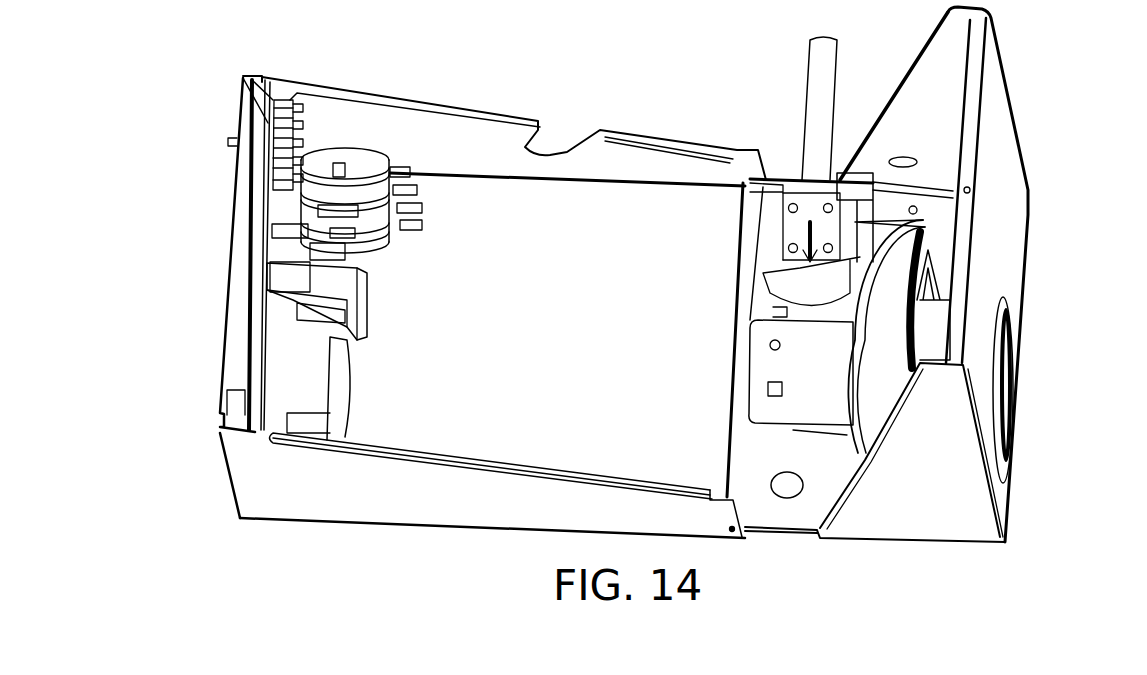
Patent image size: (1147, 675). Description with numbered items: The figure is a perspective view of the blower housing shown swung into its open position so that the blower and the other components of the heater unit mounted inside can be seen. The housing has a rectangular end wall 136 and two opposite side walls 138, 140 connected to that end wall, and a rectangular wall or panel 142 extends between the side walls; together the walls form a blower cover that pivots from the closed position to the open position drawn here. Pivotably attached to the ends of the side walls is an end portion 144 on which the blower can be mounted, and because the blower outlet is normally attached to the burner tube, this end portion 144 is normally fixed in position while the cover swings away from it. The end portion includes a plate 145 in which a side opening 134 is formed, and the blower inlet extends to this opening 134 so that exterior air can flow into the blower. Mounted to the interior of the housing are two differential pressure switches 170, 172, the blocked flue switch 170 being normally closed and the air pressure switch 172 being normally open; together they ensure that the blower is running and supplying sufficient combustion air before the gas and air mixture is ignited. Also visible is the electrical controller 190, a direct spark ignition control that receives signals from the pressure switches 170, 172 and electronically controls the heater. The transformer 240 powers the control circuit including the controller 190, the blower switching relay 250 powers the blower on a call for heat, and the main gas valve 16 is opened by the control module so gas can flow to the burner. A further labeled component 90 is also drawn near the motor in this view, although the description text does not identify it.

The main gas valve 16 is at (740, 234).
The housing 90 is at (763, 363).
The side opening 134 is at (1003, 333).
The end wall 136 is at (236, 182).
The side wall 138 is at (480, 133).
The side wall 140 is at (422, 477).
The rectangular wall or panel 142 is at (578, 304).
The end portion 144 is at (905, 497).
The plate 145 is at (995, 128).
The differential pressure switch 170 is at (375, 150).
The differential pressure switch 172 is at (395, 248).
The electrical controller 190 is at (260, 362).
The transformer 240 is at (367, 310).
The blower switching relay 250 is at (253, 258).